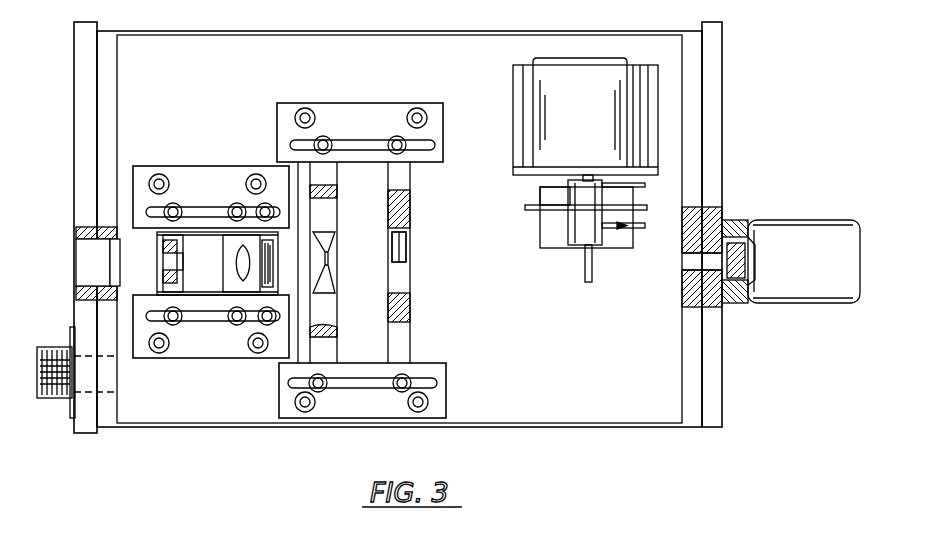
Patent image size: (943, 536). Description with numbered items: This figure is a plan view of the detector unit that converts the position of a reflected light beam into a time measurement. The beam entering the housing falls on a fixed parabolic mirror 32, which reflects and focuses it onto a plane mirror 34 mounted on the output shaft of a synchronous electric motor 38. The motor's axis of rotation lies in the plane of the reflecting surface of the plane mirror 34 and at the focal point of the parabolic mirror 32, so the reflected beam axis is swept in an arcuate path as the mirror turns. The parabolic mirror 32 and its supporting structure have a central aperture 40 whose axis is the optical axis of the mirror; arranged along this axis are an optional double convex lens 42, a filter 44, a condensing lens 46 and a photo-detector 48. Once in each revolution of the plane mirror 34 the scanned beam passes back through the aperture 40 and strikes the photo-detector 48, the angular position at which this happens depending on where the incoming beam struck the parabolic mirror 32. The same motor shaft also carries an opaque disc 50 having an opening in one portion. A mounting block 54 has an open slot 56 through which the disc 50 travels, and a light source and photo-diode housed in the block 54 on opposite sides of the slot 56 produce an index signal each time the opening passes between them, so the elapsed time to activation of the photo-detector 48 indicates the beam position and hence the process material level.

The fixed parabolic mirror 32 is at (328, 278).
The plane mirror 34 is at (585, 276).
The synchronous electric motor 38 is at (555, 80).
The central aperture 40 is at (338, 262).
The double convex lens 42 is at (408, 263).
The filter 44 is at (270, 257).
The condensing lens 46 is at (243, 258).
The photo-detector 48 is at (185, 263).
The opaque disc 50 is at (532, 207).
The mounting block 54 is at (605, 246).
The open slot 56 is at (623, 229).